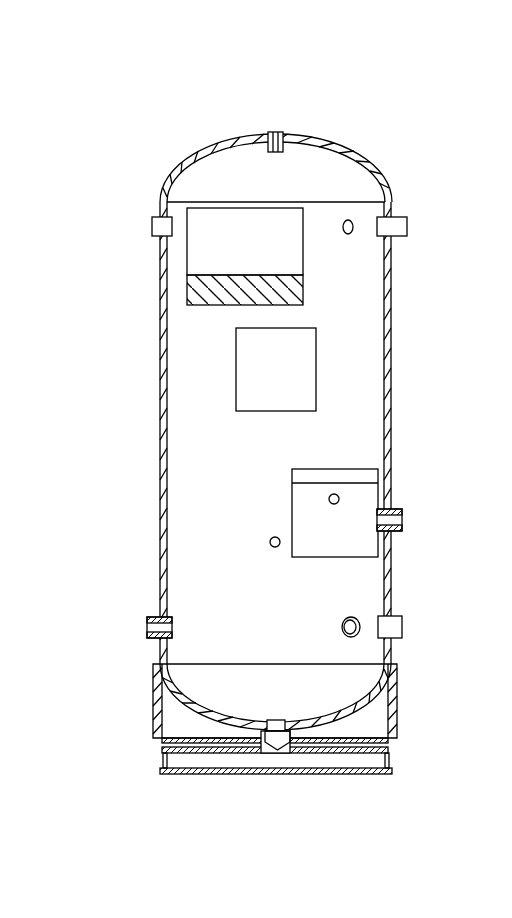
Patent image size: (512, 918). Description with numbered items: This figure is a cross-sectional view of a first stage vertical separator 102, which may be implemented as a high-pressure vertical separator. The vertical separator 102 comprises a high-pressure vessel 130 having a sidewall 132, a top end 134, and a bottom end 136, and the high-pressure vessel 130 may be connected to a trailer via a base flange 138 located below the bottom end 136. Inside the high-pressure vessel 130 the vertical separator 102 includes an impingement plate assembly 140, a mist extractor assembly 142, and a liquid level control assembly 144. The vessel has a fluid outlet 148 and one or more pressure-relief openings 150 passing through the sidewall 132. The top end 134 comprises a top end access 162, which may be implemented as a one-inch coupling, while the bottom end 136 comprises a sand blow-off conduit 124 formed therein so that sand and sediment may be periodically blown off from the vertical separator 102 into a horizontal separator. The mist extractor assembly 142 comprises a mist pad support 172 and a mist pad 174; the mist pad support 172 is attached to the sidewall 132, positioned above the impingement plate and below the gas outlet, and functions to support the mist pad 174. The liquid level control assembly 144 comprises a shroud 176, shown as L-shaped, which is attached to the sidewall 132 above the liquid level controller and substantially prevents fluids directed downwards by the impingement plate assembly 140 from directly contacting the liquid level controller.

The vertical separator 102 is at (134, 79).
The sand blow-off conduit 124 is at (166, 746).
The high-pressure vessel 130 is at (394, 329).
The sidewall 132 is at (390, 385).
The top end 134 is at (190, 164).
The bottom end 136 is at (180, 699).
The base flange 138 is at (397, 712).
The impingement plate assembly 140 is at (254, 418).
The mist extractor assembly 142 is at (197, 314).
The liquid level control assembly 144 is at (306, 565).
The fluid outlet 148 is at (402, 520).
The pressure-relief opening 150 is at (152, 222).
The top end access 162 is at (277, 131).
The mist pad support 172 is at (187, 258).
The mist pad 174 is at (303, 293).
The shroud 176 is at (292, 476).